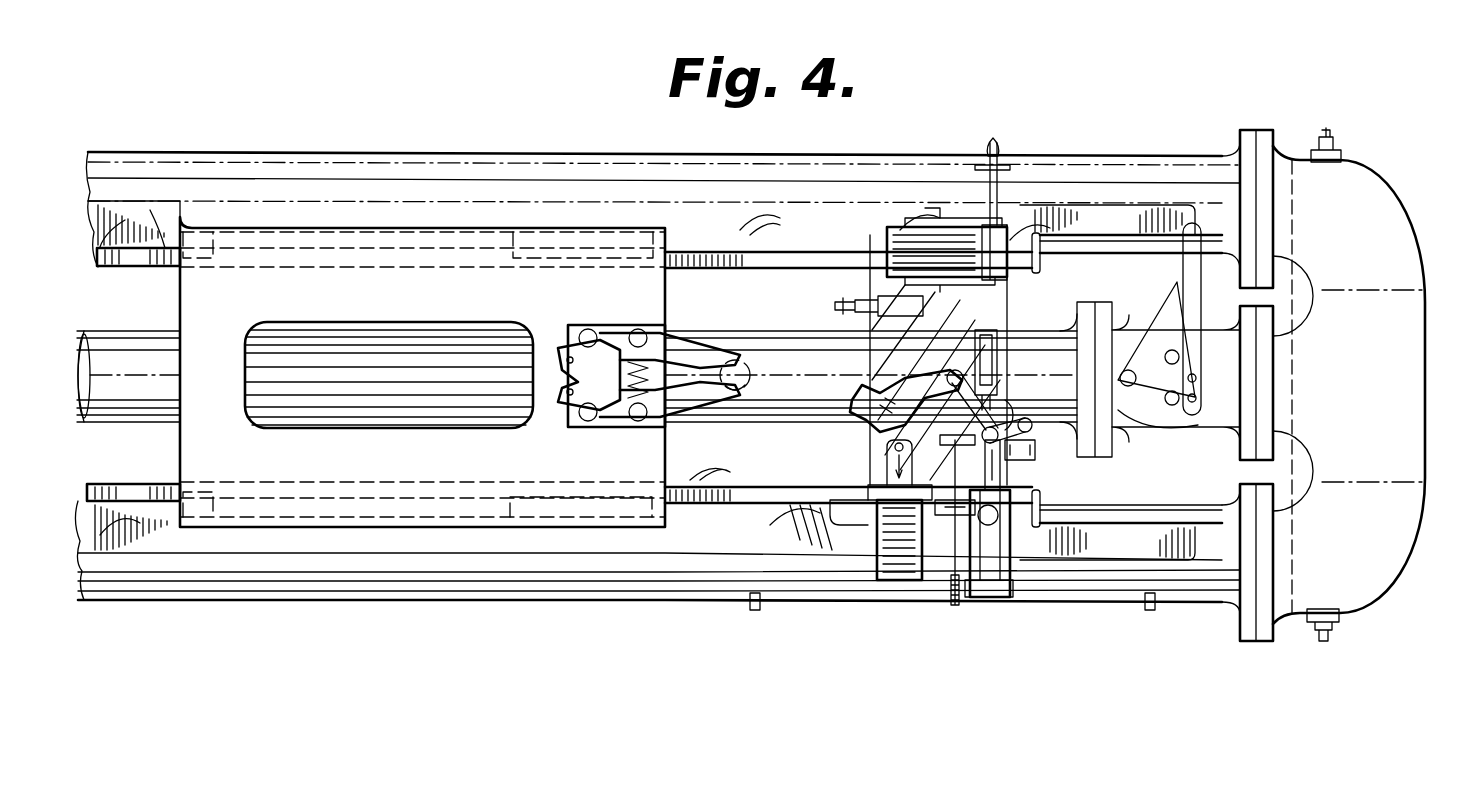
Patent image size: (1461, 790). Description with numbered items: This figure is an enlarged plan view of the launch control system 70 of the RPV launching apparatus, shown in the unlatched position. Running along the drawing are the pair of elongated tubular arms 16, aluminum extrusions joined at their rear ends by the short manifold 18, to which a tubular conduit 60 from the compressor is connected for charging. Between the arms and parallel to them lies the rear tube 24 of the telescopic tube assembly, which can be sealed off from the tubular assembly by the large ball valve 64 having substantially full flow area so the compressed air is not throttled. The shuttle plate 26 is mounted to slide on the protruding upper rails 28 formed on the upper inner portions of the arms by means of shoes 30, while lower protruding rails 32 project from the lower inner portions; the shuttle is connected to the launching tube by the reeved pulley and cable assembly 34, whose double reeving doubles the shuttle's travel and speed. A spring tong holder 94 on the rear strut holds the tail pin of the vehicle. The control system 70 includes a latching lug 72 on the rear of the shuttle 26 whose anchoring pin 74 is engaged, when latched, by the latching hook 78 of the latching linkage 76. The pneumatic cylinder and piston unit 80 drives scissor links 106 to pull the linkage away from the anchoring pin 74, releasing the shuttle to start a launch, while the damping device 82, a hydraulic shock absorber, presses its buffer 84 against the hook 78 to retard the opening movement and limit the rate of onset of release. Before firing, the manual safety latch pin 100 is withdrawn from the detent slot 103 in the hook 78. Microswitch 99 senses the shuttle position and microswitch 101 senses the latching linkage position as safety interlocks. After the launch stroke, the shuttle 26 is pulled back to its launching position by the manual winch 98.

The tubular arms 16 is at (560, 187).
The manifold 18 is at (1388, 392).
The rear tube 24 is at (748, 348).
The shuttle plate 26 is at (420, 536).
The upper rails 28 is at (126, 256).
The shoes 30 is at (592, 245).
The lower protruding rails 32 is at (165, 262).
The reeved pulley and cable assembly 34 is at (197, 370).
The tubular conduit 60 is at (1326, 630).
The ball valve 64 is at (1205, 397).
The launch control system 70 is at (958, 226).
The latching lug 72 is at (598, 345).
The anchoring pin 74 is at (745, 390).
The latching linkage 76 is at (905, 418).
The latching hook 78 is at (858, 398).
The pneumatic cylinder and piston unit 80 is at (985, 560).
The damping device 82 is at (890, 555).
The buffer 84 is at (886, 450).
The spring tong holder 94 is at (565, 393).
The manual winch 98 is at (952, 275).
The microswitch 99 is at (872, 300).
The manual safety latch pin 100 is at (950, 560).
The microswitch 101 is at (982, 345).
The detent slot 103 is at (1020, 405).
The scissor links 106 is at (1020, 440).